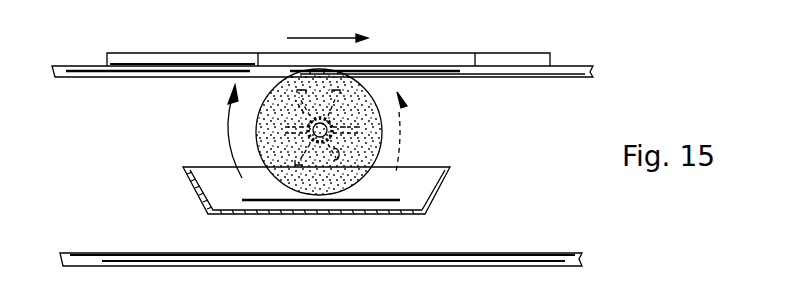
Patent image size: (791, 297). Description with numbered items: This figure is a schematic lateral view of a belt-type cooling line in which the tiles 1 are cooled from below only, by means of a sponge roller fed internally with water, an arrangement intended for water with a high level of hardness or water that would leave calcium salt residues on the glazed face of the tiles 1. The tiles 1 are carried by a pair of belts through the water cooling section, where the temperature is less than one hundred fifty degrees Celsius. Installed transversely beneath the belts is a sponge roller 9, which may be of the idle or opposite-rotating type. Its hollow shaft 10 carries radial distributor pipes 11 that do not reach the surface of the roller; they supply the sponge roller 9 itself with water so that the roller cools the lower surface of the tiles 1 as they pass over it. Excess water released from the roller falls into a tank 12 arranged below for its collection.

The tile 1 is at (157, 63).
The sponge roller 9 is at (306, 137).
The hollow shaft 10 is at (326, 139).
The radial distributor pipes 11 is at (392, 116).
The tank 12 is at (432, 188).